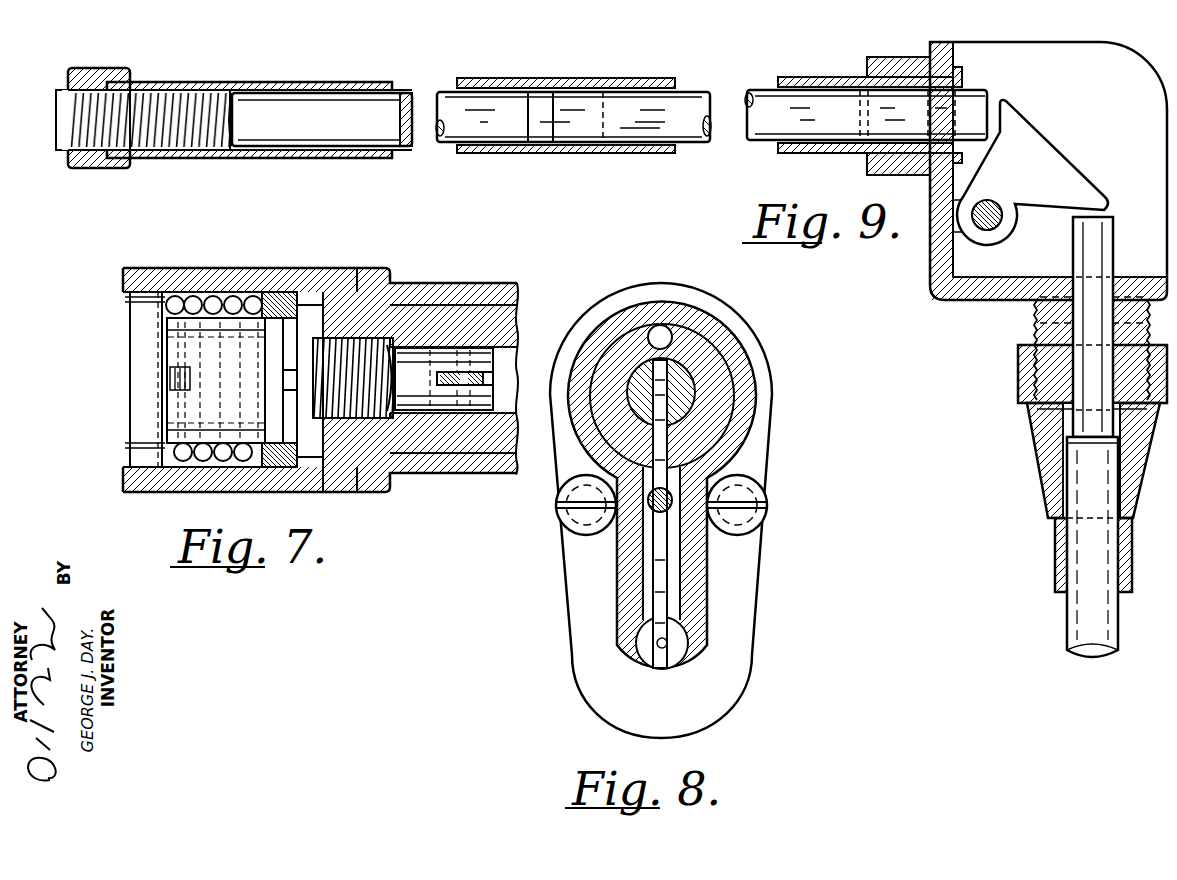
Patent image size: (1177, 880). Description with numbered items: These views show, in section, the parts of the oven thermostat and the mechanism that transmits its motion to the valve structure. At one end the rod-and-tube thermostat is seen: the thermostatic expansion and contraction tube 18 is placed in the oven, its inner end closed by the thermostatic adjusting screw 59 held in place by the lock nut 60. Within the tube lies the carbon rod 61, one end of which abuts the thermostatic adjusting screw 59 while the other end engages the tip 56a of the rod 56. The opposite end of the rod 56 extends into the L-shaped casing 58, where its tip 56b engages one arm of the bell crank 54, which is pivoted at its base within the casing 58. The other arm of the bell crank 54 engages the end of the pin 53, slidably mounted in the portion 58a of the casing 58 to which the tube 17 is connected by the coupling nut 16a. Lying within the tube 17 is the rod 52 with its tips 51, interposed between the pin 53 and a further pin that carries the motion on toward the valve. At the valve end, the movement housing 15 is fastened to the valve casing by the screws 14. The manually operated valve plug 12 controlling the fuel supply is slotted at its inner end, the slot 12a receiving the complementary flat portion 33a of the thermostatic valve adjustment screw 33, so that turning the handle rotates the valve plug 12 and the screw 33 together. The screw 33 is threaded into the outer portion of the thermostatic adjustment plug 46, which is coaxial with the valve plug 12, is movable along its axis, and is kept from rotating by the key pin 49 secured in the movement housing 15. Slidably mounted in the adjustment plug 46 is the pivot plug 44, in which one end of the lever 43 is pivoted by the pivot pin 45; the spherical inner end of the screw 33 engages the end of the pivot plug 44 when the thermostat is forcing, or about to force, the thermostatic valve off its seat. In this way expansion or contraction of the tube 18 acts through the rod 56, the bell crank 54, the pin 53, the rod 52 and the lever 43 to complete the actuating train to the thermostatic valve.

In FIG. 7, the valve plug 12 is at (135, 403).
In FIG. 7, the slot 12a is at (190, 367).
In FIG. 8, the screws 14 is at (566, 522).
In FIG. 8, the movement housing 15 is at (618, 553).
In FIG. 9, the coupling nut 16a is at (1045, 458).
In FIG. 9, the tube 17 is at (1058, 543).
In FIG. 9, the thermostatic expansion and contraction tube 18 is at (545, 80).
In FIG. 7, the thermostatic valve adjustment screw 33 is at (310, 381).
In FIG. 7, the flat portion 33a is at (252, 372).
In FIG. 7, the lever 43 is at (493, 382).
In FIG. 8, the lever 43 is at (663, 545).
In FIG. 7, the pivot plug 44 is at (490, 357).
In FIG. 8, the pivot plug 44 is at (628, 375).
In FIG. 7, the pivot pin 45 is at (468, 372).
In FIG. 8, the thermostatic adjustment plug 46 is at (707, 347).
In FIG. 8, the key pin 49 is at (663, 326).
In FIG. 9, the tips 51 is at (1080, 443).
In FIG. 9, the rod 52 is at (1083, 611).
In FIG. 9, the pin 53 is at (1102, 244).
In FIG. 9, the bell crank 54 is at (1065, 165).
In FIG. 9, the rod 56 is at (760, 95).
In FIG. 9, the tip 56a is at (542, 125).
In FIG. 9, the tip 56b is at (973, 100).
In FIG. 9, the L-shaped casing 58 is at (1000, 293).
In FIG. 9, the portion 58a is at (1037, 318).
In FIG. 9, the thermostatic adjusting screw 59 is at (185, 82).
In FIG. 9, the lock nut 60 is at (118, 68).
In FIG. 9, the carbon rod 61 is at (450, 97).